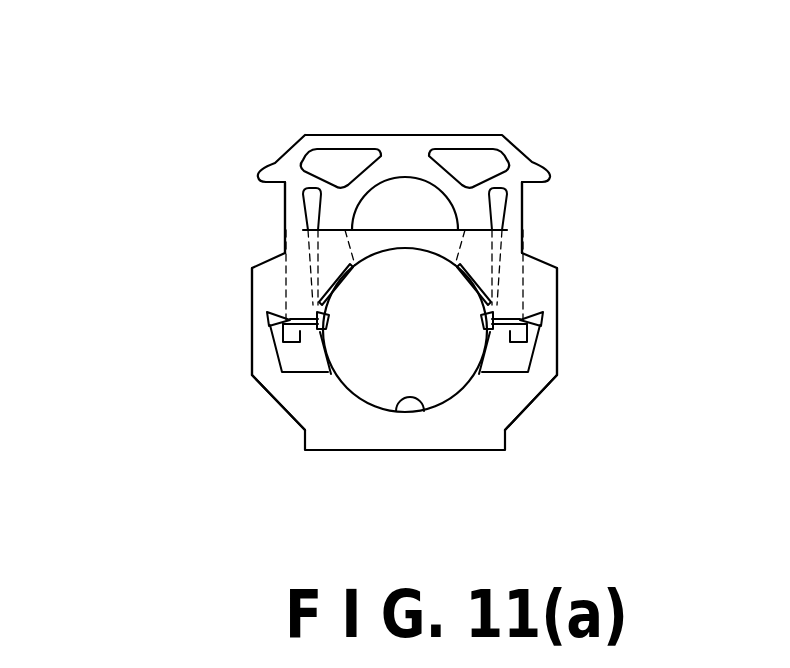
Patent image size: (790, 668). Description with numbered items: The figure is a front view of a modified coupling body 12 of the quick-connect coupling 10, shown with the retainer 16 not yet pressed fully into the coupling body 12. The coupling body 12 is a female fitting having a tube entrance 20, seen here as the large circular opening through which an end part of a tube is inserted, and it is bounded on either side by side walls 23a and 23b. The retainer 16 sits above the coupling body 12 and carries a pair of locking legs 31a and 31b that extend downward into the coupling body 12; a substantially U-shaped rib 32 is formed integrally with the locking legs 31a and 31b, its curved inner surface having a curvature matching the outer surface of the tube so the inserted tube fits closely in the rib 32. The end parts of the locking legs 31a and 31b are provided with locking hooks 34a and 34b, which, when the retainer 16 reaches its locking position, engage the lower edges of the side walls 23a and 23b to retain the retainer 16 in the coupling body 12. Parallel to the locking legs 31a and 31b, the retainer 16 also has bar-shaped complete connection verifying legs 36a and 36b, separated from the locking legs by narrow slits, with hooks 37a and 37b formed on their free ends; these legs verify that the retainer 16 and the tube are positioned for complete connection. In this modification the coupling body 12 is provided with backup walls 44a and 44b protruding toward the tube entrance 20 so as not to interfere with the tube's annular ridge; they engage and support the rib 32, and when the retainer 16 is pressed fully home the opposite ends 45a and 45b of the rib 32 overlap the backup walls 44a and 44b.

The quick-connect coupling 10 is at (178, 190).
The coupling body 12 is at (552, 387).
The retainer 16 is at (462, 118).
The tube entrance 20 is at (403, 407).
The side wall 23a is at (251, 282).
The side wall 23b is at (560, 277).
The locking leg 31a is at (291, 216).
The locking leg 31b is at (525, 210).
The U-shaped rib 32 is at (357, 207).
The locking hook 34a is at (268, 326).
The locking hook 34b is at (543, 325).
The complete connection verifying leg 36a is at (302, 200).
The complete connection verifying leg 36b is at (502, 193).
The hook 37a is at (328, 327).
The hook 37b is at (482, 327).
The backup wall 44a is at (328, 375).
The backup wall 44b is at (483, 378).
The end of the rib 45a is at (347, 283).
The end of the rib 45b is at (463, 283).